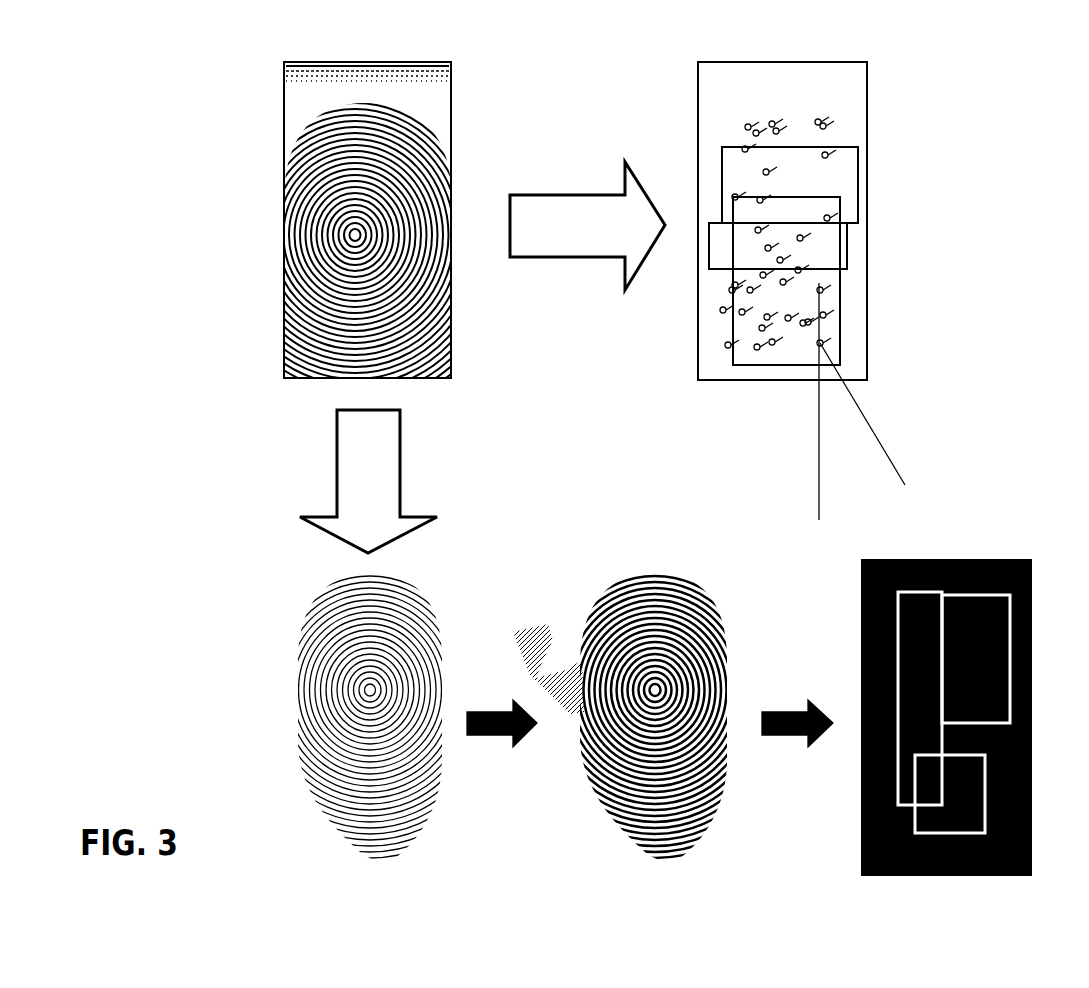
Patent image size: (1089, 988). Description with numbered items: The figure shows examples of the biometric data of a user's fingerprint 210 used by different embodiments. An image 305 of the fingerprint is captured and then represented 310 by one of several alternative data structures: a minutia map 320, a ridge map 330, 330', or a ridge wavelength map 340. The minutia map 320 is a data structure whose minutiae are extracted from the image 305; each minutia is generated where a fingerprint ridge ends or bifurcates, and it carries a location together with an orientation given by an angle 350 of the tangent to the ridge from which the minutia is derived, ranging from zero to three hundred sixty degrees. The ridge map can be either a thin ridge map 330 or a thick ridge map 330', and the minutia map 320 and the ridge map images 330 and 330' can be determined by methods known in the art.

The fingerprint 210 is at (300, 163).
The image of fingerprint 305 is at (398, 63).
The representation 310 is at (400, 487).
The minutia map 320 is at (698, 89).
The thin ridge map 330 is at (370, 722).
The thick ridge map 330' is at (655, 719).
The ridge wavelength map 340 is at (992, 557).
The angle 350 is at (832, 330).